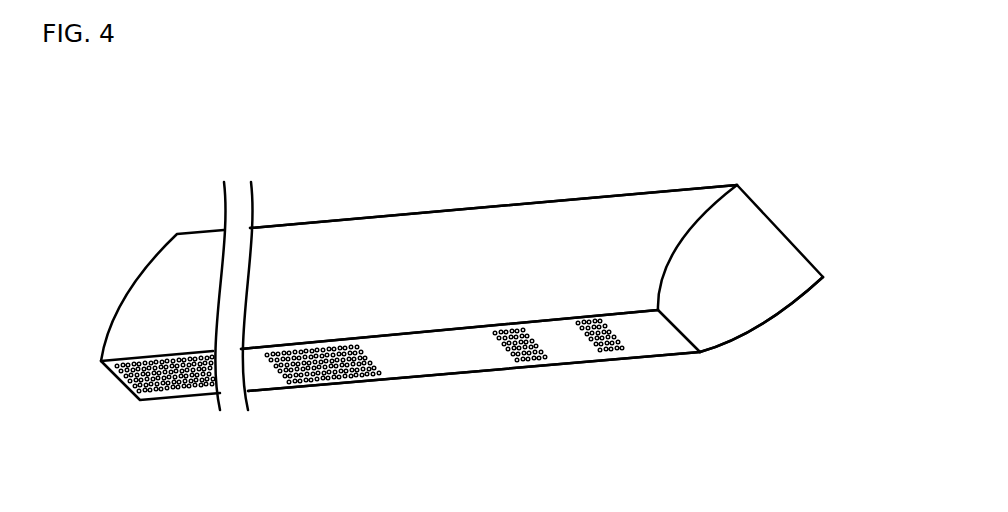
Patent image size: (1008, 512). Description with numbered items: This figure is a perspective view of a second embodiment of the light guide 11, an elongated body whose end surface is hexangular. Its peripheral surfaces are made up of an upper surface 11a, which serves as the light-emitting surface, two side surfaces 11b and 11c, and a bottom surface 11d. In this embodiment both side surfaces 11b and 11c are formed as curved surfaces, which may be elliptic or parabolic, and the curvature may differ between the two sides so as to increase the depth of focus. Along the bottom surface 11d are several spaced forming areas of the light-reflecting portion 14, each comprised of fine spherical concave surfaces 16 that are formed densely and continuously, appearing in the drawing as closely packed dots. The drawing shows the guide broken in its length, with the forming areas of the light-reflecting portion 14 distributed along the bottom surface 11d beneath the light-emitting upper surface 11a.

The light guide 11 is at (427, 210).
The upper surface 11a is at (778, 223).
The side surface 11b is at (562, 243).
The side surface 11c is at (760, 330).
The bottom surface 11d is at (575, 347).
The light-reflecting portion 14 is at (178, 392).
The fine spherical concave surfaces 16 is at (355, 385).